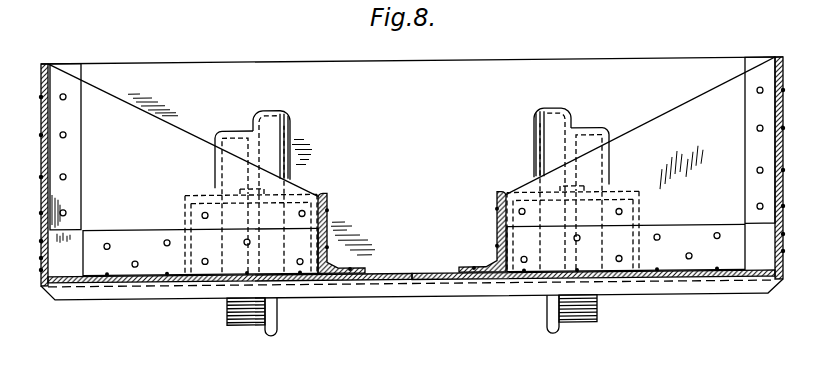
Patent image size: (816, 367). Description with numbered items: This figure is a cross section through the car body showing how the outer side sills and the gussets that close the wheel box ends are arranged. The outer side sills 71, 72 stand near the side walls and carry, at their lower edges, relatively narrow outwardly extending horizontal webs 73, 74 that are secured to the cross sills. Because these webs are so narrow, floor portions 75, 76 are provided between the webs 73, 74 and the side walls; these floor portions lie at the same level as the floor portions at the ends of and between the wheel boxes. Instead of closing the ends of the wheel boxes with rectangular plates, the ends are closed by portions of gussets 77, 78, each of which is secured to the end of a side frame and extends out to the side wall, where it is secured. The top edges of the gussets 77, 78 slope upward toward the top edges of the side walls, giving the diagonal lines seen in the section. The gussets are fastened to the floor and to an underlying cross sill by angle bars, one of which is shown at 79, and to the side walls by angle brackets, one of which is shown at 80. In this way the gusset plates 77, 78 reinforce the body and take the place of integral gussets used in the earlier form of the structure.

The outer side sill 71 is at (183, 210).
The outer side sill 72 is at (643, 203).
The horizontal web 73 is at (158, 291).
The horizontal web 74 is at (668, 284).
The floor portion 75 is at (122, 278).
The floor portion 76 is at (700, 277).
The gusset 77 is at (150, 128).
The gusset 78 is at (655, 131).
The angle bar 79 is at (125, 240).
The angle bracket 80 is at (74, 136).